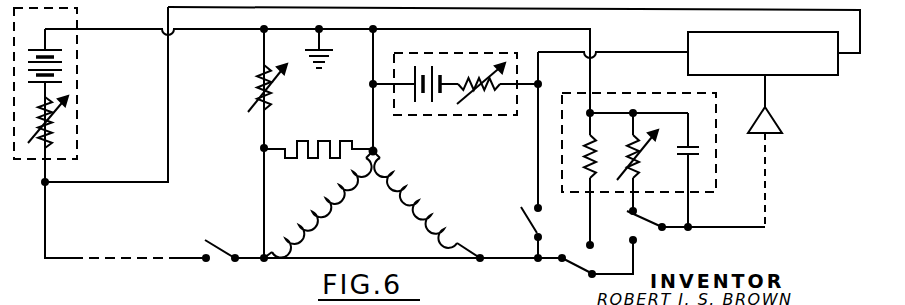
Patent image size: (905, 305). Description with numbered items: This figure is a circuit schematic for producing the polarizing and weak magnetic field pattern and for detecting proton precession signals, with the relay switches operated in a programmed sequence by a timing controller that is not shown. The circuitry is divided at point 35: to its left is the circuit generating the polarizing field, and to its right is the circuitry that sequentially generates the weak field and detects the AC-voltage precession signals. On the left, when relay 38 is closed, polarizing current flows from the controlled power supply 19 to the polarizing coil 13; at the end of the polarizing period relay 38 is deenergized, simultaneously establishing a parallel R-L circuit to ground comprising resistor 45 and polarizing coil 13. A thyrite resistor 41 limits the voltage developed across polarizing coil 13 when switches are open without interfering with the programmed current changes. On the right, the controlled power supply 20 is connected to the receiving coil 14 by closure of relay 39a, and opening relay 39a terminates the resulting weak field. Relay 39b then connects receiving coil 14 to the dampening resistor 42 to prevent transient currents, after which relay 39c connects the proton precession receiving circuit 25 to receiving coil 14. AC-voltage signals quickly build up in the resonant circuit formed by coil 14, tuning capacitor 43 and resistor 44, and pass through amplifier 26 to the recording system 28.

The controlled power supply 19 is at (78, 70).
The resistor 45 is at (260, 84).
The thyrite resistor 41 is at (326, 139).
The point 35 is at (373, 151).
The polarizing coil 13 is at (330, 200).
The receiving coil 14 is at (424, 201).
The relay 38 is at (220, 245).
The controlled power supply 20 is at (487, 117).
The relay 39a is at (525, 222).
The relay 39b is at (580, 268).
The relay 39c is at (650, 226).
The receiving circuit 25 is at (672, 92).
The dampening resistor 42 is at (583, 149).
The resistor 44 is at (640, 170).
The tuning capacitor 43 is at (699, 151).
The recording system 28 is at (816, 77).
The amplifier 26 is at (778, 118).